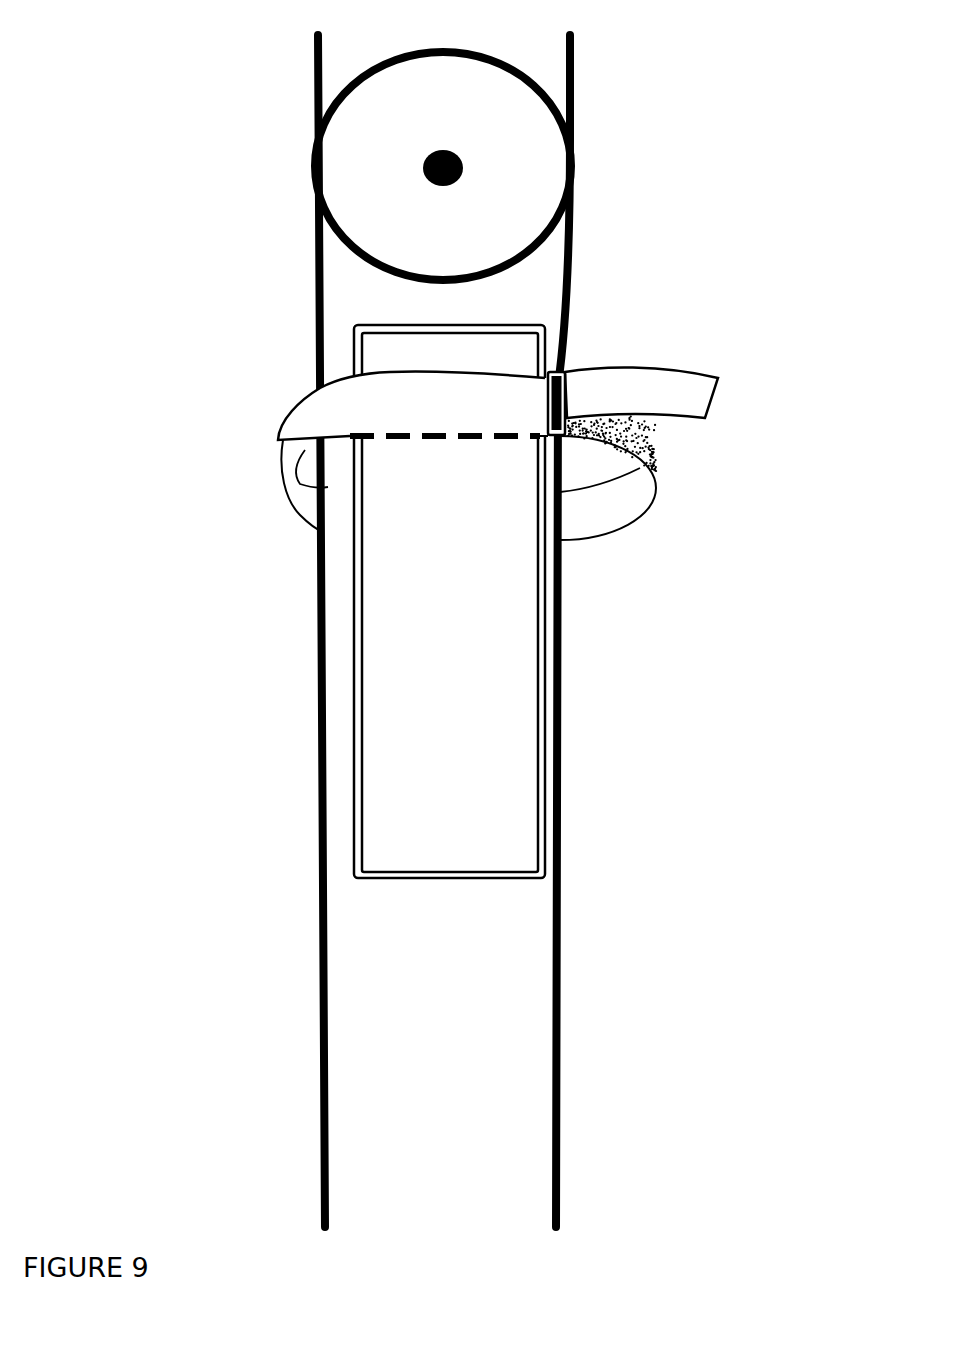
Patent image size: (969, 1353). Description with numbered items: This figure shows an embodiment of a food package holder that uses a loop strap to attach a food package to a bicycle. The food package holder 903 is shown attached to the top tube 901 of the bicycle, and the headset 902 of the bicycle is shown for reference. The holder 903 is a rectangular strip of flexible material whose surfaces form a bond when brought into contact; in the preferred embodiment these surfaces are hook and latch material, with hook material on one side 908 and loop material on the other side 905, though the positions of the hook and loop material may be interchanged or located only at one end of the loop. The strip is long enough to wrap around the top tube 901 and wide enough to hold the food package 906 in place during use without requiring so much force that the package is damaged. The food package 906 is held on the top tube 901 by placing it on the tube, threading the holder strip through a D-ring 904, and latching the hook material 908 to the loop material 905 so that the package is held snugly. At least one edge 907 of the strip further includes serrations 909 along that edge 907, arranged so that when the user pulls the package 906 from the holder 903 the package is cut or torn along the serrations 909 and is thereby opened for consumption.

The top tube 901 is at (405, 963).
The headset 902 is at (387, 255).
The food package holder 903 is at (290, 437).
The D-ring 904 is at (570, 365).
The loop material 905 is at (662, 442).
The food package 906 is at (477, 672).
The edge 907 is at (340, 438).
The hook material 908 is at (712, 400).
The serrations 909 is at (465, 442).